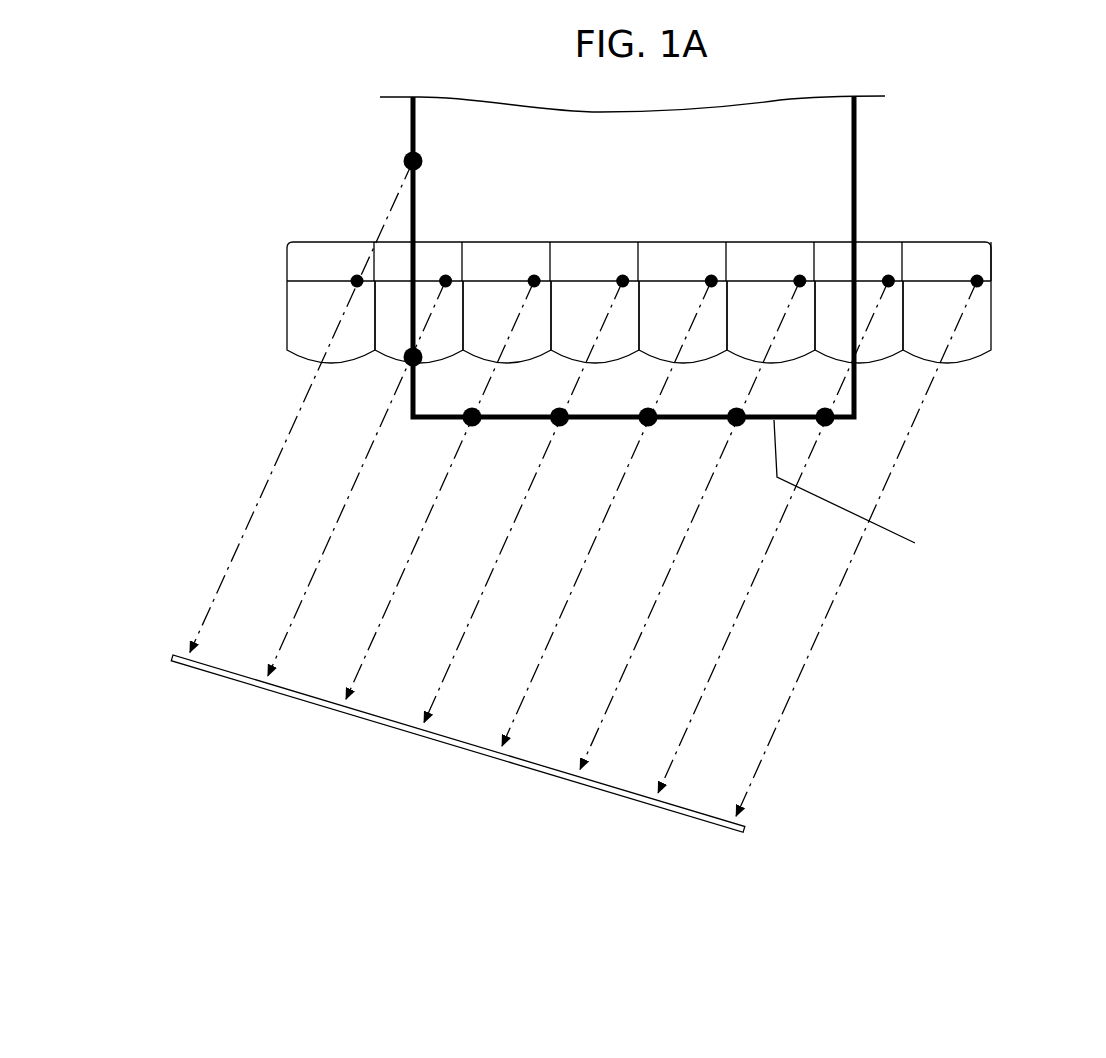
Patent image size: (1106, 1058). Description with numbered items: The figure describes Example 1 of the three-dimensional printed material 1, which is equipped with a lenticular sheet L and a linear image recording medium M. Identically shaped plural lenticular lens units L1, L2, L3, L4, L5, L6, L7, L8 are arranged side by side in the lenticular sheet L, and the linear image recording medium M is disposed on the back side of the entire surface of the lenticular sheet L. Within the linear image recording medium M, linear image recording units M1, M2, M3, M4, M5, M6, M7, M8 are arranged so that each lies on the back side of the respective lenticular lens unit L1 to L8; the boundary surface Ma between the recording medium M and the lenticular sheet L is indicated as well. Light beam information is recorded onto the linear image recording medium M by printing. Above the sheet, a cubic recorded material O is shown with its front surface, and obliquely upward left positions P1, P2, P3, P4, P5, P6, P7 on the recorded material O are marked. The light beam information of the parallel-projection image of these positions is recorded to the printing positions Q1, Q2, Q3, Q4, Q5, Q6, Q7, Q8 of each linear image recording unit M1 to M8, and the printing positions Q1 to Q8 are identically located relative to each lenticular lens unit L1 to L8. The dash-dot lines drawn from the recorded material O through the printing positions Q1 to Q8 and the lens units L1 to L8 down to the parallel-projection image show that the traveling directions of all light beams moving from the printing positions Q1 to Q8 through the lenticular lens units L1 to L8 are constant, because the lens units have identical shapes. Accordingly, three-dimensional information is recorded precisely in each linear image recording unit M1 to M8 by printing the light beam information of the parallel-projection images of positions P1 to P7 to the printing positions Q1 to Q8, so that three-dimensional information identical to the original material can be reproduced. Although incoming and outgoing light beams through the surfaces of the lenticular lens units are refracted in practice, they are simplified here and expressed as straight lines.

The three-dimensional printed material 1 is at (195, 147).
The recorded material O is at (855, 144).
The linear image recording medium M is at (268, 262).
The microlens array surface Ma is at (310, 280).
The lenticular sheet L is at (268, 337).
The linear image recording unit M1 is at (344, 261).
The linear image recording unit M2 is at (438, 261).
The linear image recording unit M3 is at (521, 261).
The linear image recording unit M4 is at (609, 261).
The linear image recording unit M5 is at (697, 261).
The linear image recording unit M6 is at (786, 261).
The linear image recording unit M7 is at (880, 261).
The linear image recording unit M8 is at (964, 261).
The lenticular lens unit L1 is at (331, 322).
The lenticular lens unit L2 is at (419, 322).
The lenticular lens unit L3 is at (507, 322).
The lenticular lens unit L4 is at (595, 322).
The lenticular lens unit L5 is at (683, 322).
The lenticular lens unit L6 is at (771, 322).
The lenticular lens unit L7 is at (859, 322).
The lenticular lens unit L8 is at (947, 322).
The position of recorded material P1 is at (405, 158).
The position of recorded material P2 is at (408, 363).
The position of recorded material P3 is at (465, 423).
The position of recorded material P4 is at (553, 423).
The position of recorded material P5 is at (641, 423).
The position of recorded material P6 is at (728, 423).
The position of recorded material P7 is at (827, 424).
The printing position Q1 is at (356, 273).
The printing position Q2 is at (448, 275).
The printing position Q3 is at (537, 275).
The printing position Q4 is at (625, 275).
The printing position Q5 is at (714, 275).
The printing position Q6 is at (802, 275).
The printing position Q7 is at (891, 275).
The printing position Q8 is at (980, 275).